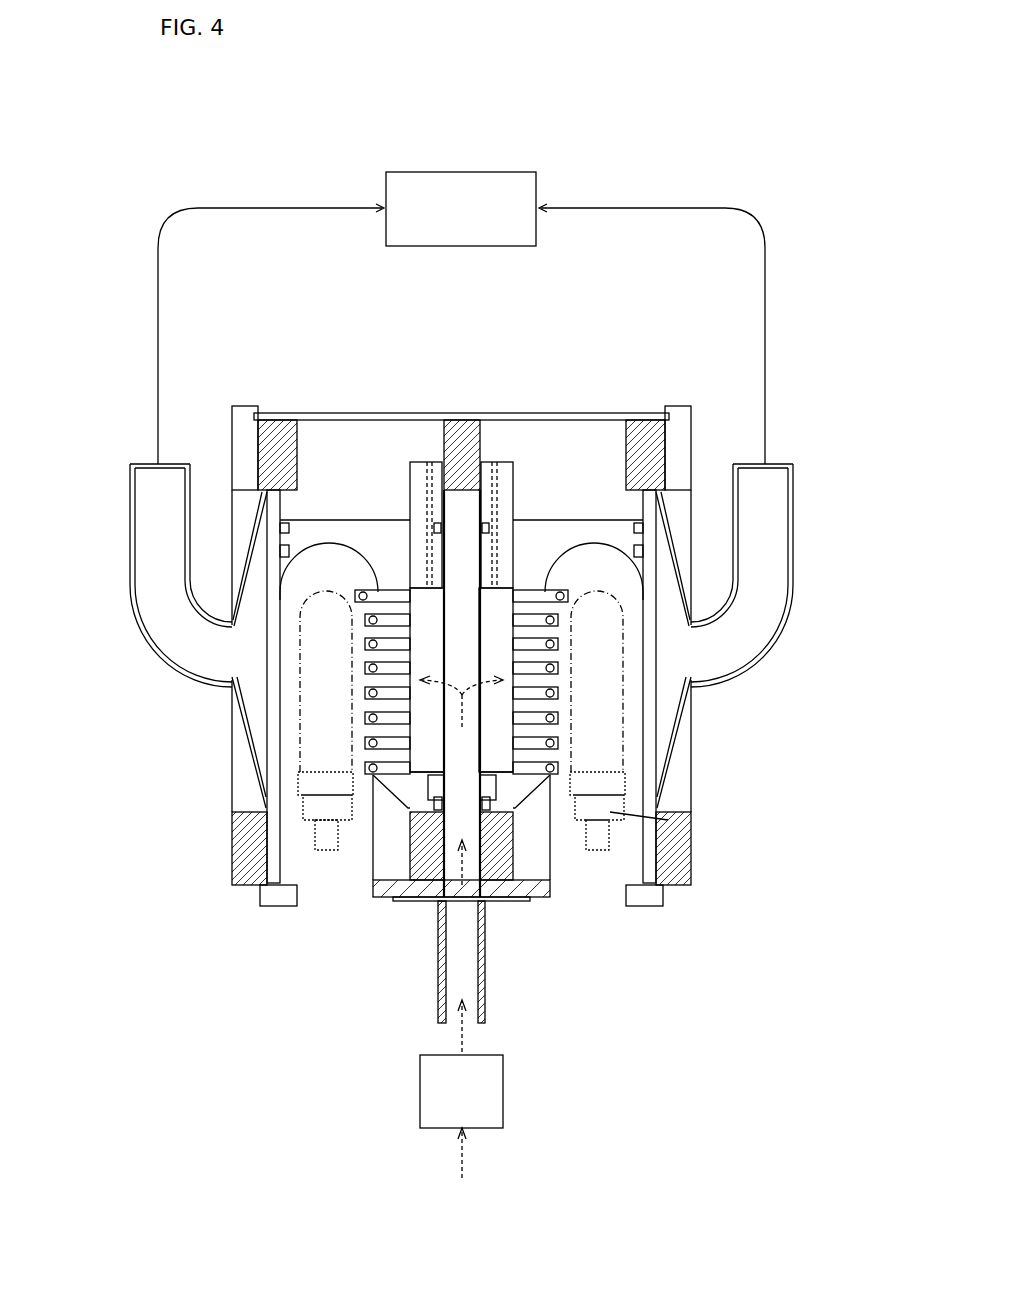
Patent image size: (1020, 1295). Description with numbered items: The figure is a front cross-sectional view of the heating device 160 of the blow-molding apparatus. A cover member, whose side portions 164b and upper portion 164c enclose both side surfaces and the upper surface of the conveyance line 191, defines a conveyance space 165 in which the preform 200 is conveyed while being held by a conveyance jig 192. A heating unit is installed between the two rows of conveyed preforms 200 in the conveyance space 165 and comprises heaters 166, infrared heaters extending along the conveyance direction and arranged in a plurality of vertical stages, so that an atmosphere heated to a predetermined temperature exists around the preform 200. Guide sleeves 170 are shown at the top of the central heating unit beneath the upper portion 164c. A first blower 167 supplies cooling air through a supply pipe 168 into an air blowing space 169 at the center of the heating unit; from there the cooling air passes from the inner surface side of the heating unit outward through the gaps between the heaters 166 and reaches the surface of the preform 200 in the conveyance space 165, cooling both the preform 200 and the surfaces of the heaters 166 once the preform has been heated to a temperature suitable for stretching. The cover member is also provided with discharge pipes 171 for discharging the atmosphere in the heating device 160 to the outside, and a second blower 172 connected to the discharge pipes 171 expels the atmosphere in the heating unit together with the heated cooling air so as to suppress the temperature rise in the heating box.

The heating device 160 is at (660, 128).
The second blower 172 is at (458, 182).
The cover member 164b is at (265, 772).
The cover member 164c is at (572, 412).
The guide sleeve 170 is at (425, 603).
The discharge pipe 171 is at (148, 543).
The conveyance space 165 is at (290, 720).
The preform 200 is at (613, 650).
The conveyance line 191 is at (325, 855).
The conveyance jig 192 is at (668, 820).
The heater 166 is at (373, 776).
The supply pipe 168 is at (468, 987).
The air blowing space 169 is at (448, 822).
The first blower 167 is at (487, 1098).